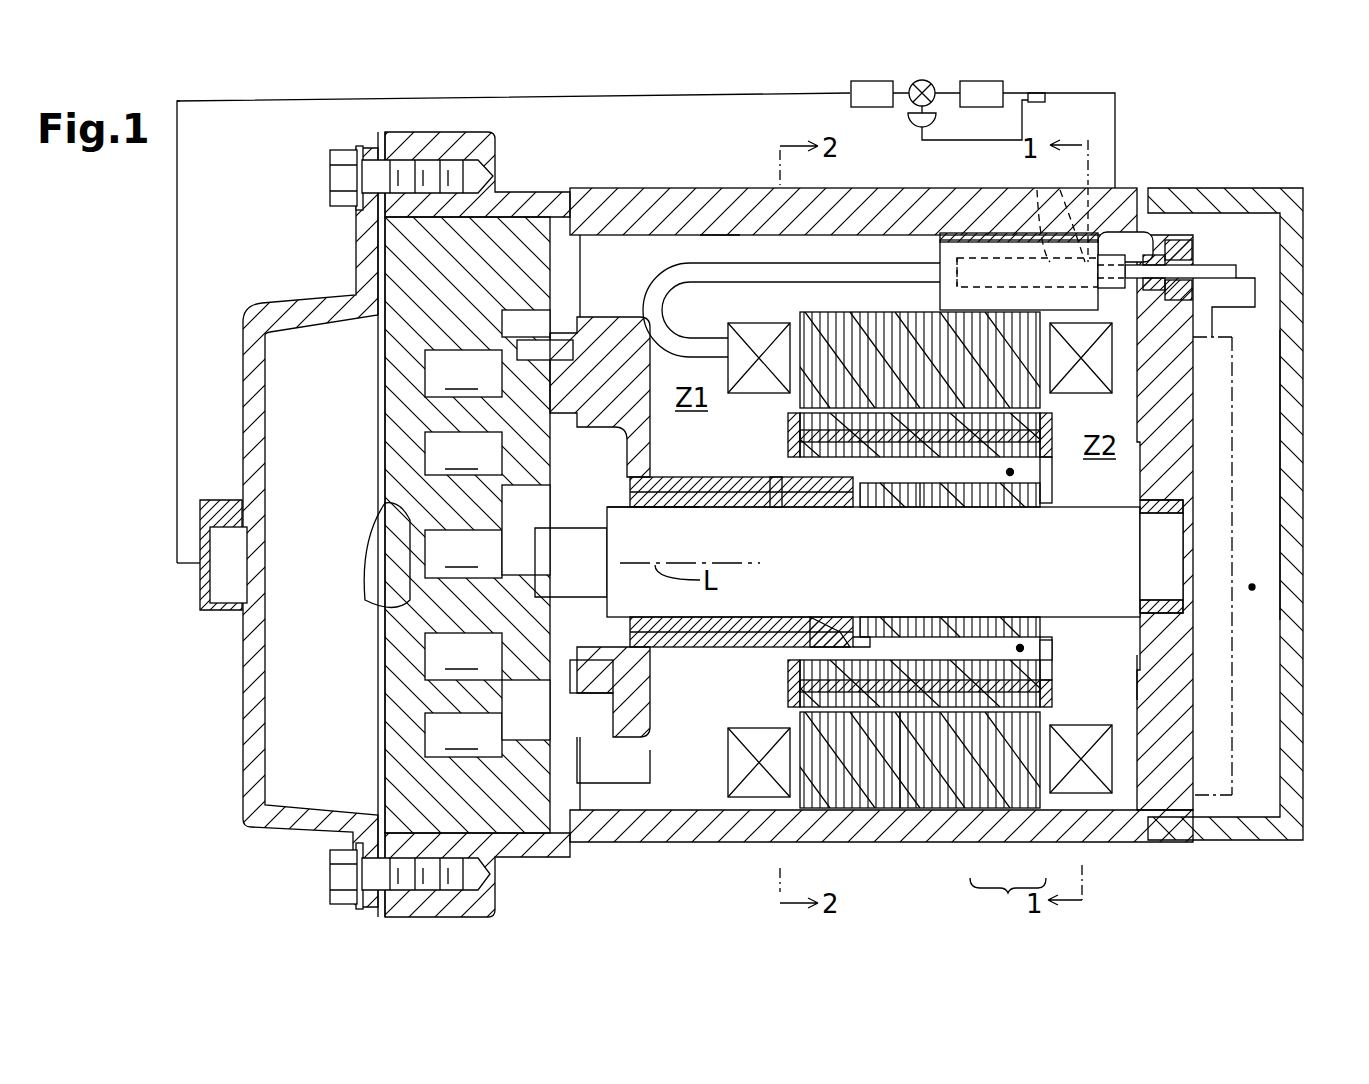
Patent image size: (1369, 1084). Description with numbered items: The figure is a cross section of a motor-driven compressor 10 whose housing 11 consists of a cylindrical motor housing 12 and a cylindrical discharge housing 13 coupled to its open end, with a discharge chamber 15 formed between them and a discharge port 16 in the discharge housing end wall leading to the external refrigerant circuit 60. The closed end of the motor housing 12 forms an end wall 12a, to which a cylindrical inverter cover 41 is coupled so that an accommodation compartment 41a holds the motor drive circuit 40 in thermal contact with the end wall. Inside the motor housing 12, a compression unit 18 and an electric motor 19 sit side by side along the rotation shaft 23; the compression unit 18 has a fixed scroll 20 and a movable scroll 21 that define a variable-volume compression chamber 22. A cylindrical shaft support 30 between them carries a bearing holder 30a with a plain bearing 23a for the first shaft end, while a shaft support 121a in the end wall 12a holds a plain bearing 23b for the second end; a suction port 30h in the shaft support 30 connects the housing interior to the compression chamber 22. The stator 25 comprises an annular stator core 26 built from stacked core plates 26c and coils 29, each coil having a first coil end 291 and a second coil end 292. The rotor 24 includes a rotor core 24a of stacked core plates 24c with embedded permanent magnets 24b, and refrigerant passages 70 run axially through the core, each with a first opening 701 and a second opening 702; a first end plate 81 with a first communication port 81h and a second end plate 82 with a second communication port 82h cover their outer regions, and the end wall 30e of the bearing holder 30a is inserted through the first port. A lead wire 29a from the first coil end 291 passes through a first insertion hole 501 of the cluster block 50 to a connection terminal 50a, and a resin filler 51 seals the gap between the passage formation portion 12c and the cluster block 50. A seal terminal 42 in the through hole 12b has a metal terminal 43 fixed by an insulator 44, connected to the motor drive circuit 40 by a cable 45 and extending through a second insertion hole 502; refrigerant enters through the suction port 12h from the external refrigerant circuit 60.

The motor-driven compressor 10 is at (291, 149).
The housing 11 is at (606, 192).
The motor housing 12 is at (674, 200).
The end wall 12a is at (1183, 709).
The through hole 12b is at (1195, 250).
The passage formation portion 12c is at (716, 200).
The suction port 12h is at (1128, 188).
The discharge housing 13 is at (246, 300).
The discharge chamber 15 is at (335, 507).
The discharge port 16 is at (215, 603).
The compression unit 18 is at (659, 747).
The electric motor 19 is at (866, 808).
The fixed scroll 20 is at (385, 757).
The movable scroll 21 is at (560, 690).
The compression chamber 22 is at (499, 533).
The rotation shaft 23 is at (668, 490).
The plain bearing 23a is at (688, 507).
The plain bearing 23b is at (1140, 504).
The rotor 24 is at (858, 540).
The rotor core 24a is at (885, 617).
The permanent magnets 24b is at (888, 460).
The core plates 24c is at (932, 511).
The stator 25 is at (1008, 899).
The stator core 26 is at (983, 808).
The core plates 26c is at (905, 818).
The coils 29 is at (1035, 808).
The lead wire 29a is at (655, 292).
The first coil end 291 is at (735, 342).
The second coil end 292 is at (1105, 342).
The shaft support 30 is at (596, 420).
The bearing holder 30a is at (822, 630).
The end wall 30e is at (867, 634).
The suction port 30h is at (577, 785).
The motor drive circuit 40 is at (1232, 507).
The inverter cover 41 is at (1303, 613).
The accommodation compartment 41a is at (1252, 587).
The seal terminal 42 is at (1207, 239).
The metal terminal 43 is at (1218, 254).
The insulator 44 is at (1193, 292).
The cable 45 is at (1303, 302).
The cluster block 50 is at (1070, 258).
The connection terminals 50a is at (1015, 240).
The resin filler 51 is at (952, 240).
The first insertion hole 501 is at (925, 238).
The second insertion hole 502 is at (1093, 187).
The external refrigerant circuit 60 is at (542, 103).
The refrigerant passages 70 is at (1010, 472).
The first opening 701 is at (788, 458).
The second opening 702 is at (1052, 440).
The first end plate 81 is at (800, 433).
The first communication port 81h is at (776, 507).
The second end plate 82 is at (1052, 688).
The second communication port 82h is at (1052, 643).
The shaft support 121a is at (1133, 660).